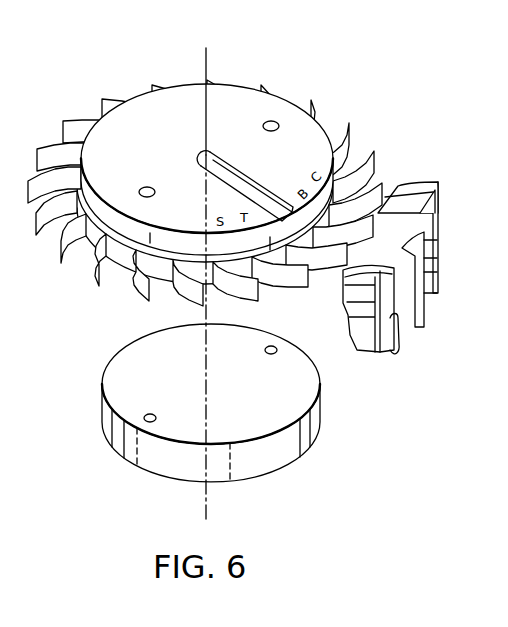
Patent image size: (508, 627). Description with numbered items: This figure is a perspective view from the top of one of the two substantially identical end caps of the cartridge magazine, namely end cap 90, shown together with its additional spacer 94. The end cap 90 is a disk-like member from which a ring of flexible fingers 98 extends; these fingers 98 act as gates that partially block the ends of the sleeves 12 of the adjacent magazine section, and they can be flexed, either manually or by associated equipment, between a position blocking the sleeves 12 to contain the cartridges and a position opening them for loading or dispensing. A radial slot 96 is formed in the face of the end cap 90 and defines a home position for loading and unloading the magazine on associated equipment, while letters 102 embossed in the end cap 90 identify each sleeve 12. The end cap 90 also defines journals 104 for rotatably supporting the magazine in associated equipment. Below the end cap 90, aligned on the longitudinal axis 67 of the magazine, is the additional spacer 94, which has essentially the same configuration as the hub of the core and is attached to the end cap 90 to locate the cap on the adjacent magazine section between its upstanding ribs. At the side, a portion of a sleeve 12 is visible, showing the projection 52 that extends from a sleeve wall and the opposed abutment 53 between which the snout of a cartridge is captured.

The sleeve 12 is at (399, 295).
The projection 52 is at (409, 297).
The abutment 53 is at (394, 350).
The longitudinal axis 67 is at (207, 510).
The end cap 90 is at (200, 202).
The spacer 94 is at (120, 476).
The radial slot 96 is at (228, 162).
The flexible finger 98 is at (102, 287).
The letters 102 is at (178, 91).
The journal 104 is at (331, 127).